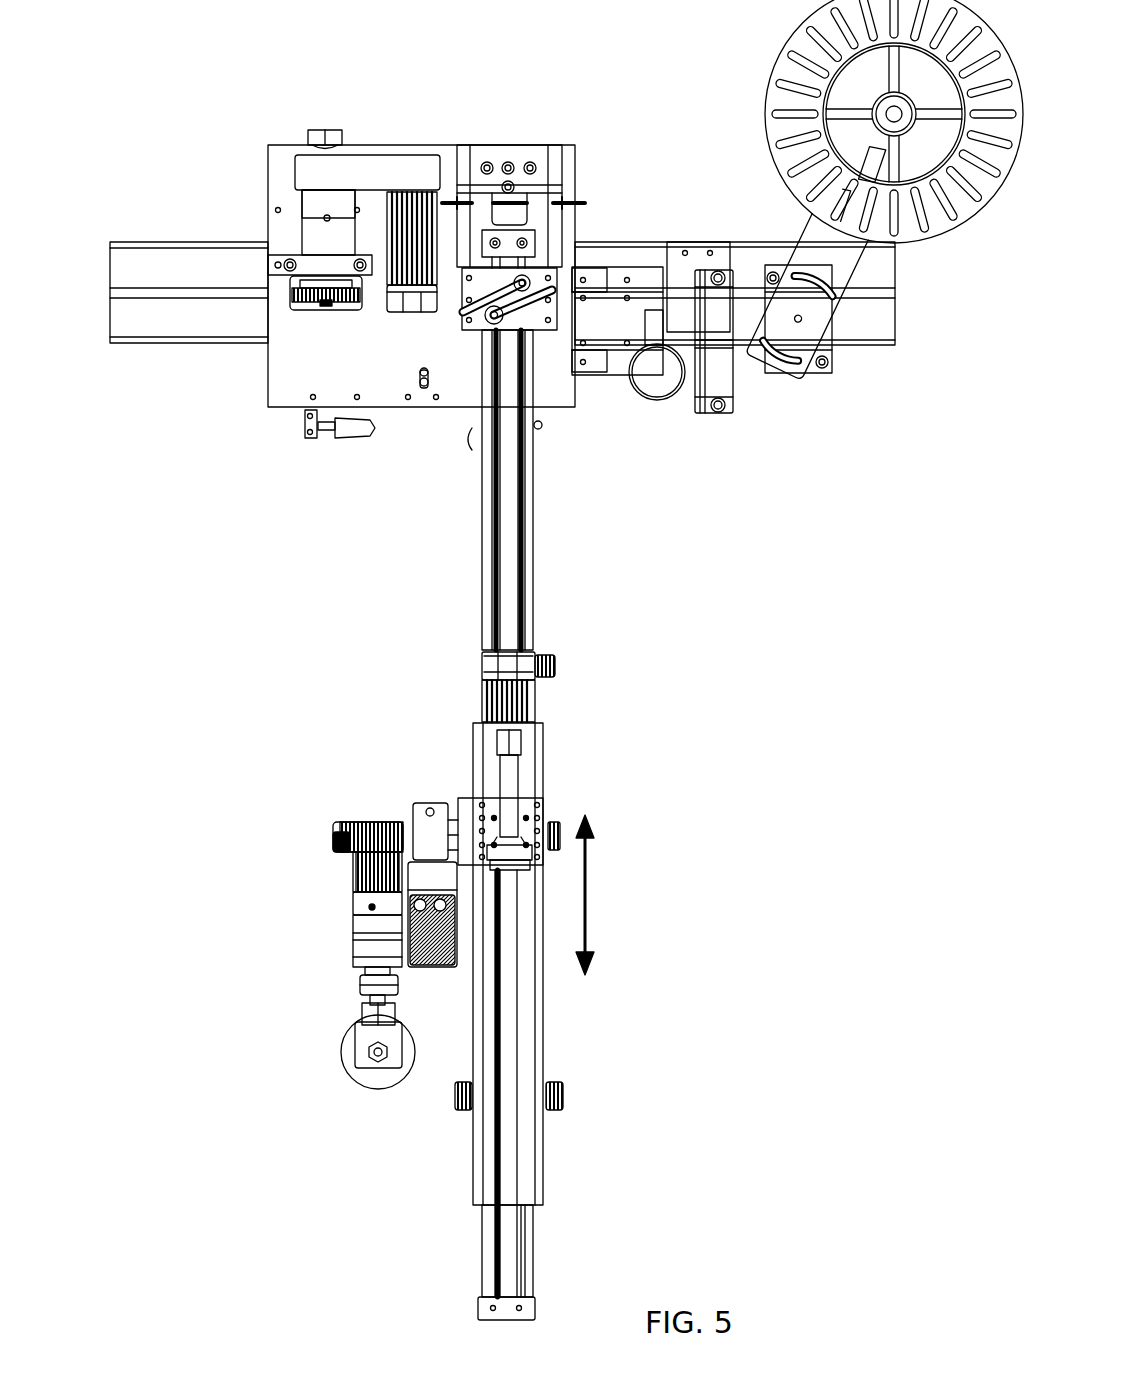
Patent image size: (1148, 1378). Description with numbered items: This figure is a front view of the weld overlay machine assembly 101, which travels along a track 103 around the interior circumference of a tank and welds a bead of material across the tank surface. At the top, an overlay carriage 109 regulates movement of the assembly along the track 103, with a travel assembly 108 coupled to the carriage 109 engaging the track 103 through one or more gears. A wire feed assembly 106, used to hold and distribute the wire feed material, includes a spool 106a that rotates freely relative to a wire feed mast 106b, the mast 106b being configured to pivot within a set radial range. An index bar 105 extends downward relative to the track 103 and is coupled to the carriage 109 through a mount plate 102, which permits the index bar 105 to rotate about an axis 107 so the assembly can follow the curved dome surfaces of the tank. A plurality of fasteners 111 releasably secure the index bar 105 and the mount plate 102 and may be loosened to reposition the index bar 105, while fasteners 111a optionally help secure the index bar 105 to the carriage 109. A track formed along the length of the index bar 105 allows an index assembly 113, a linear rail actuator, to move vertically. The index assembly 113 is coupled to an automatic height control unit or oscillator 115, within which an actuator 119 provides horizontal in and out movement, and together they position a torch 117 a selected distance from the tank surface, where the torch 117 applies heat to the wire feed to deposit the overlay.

The weld overlay machine assembly 101 is at (216, 188).
The mount plate 102 is at (540, 176).
The track 103 is at (890, 325).
The index bar 105 is at (535, 497).
The wire feed assembly 106 is at (867, 206).
The spool 106a is at (770, 78).
The wire feed mast 106b is at (820, 332).
The axis 107 is at (585, 198).
The travel assembly 108 is at (308, 305).
The overlay carriage 109 is at (268, 383).
The fasteners 111 is at (532, 163).
The fasteners 111a is at (480, 323).
The index assembly 113 is at (560, 766).
The automatic height control unit/oscillator 115 is at (320, 882).
The torch 117 is at (340, 1046).
The actuator 119 is at (440, 985).